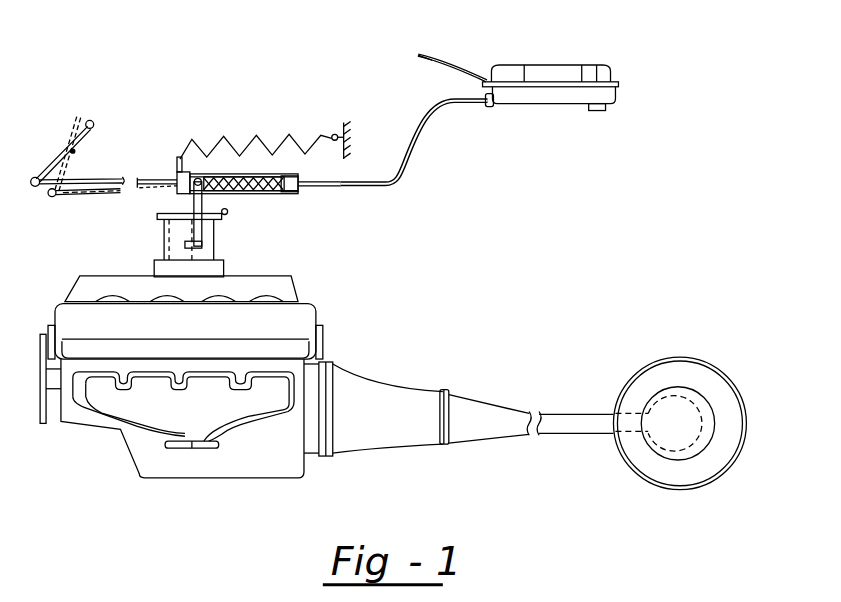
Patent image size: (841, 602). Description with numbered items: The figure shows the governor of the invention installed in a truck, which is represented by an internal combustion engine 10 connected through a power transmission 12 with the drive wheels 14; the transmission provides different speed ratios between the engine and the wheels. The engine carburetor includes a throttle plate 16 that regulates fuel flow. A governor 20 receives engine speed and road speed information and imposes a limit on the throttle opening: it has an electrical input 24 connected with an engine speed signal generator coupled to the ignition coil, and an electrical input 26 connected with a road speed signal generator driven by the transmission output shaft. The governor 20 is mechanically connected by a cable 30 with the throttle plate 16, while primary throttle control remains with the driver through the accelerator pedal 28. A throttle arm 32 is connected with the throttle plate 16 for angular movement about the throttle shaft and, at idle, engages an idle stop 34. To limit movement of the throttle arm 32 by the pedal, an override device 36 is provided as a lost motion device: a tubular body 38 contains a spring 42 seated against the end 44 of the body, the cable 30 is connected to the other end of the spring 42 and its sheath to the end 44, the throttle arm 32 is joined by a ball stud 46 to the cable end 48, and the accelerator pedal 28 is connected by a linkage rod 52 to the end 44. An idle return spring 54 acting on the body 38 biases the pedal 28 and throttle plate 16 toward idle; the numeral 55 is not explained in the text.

The internal combustion engine 10 is at (50, 280).
The power transmission 12 is at (394, 437).
The drive wheels 14 is at (750, 328).
The throttle plate 16 is at (177, 248).
The governor 20 is at (558, 55).
The electrical input 24 is at (437, 48).
The electrical input 26 is at (432, 58).
The accelerator pedal 28 is at (57, 160).
The cable 30 is at (418, 138).
The throttle arm 32 is at (172, 185).
The idle stop 34 is at (223, 208).
The override device 36 is at (268, 160).
The tubular body 38 is at (278, 188).
The spring 42 is at (243, 190).
The end of the body 44 is at (300, 172).
The ball stud 46 is at (200, 168).
The cable end 48 is at (202, 170).
The linkage rod 52 is at (87, 176).
The idle return spring 54 is at (262, 140).
The link rod 55 is at (176, 170).